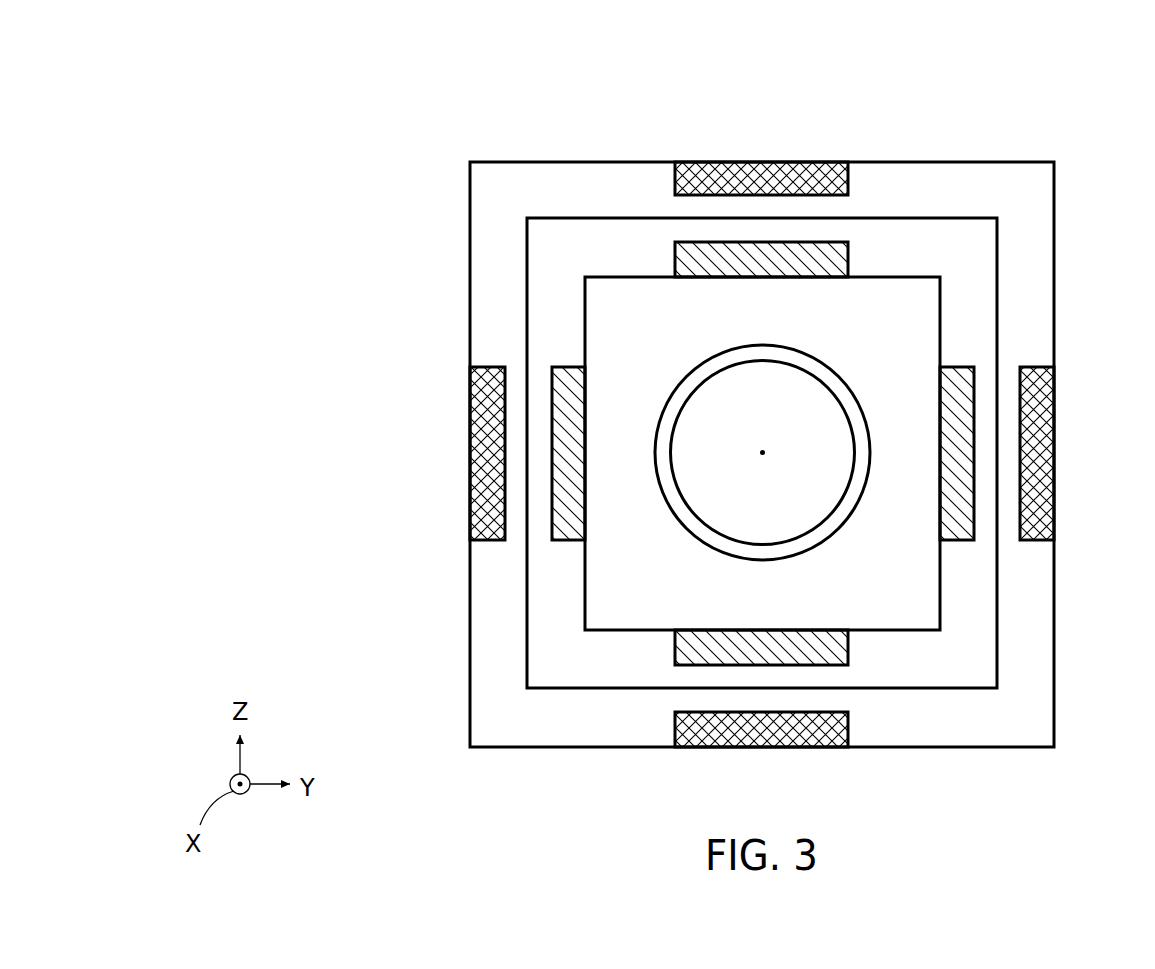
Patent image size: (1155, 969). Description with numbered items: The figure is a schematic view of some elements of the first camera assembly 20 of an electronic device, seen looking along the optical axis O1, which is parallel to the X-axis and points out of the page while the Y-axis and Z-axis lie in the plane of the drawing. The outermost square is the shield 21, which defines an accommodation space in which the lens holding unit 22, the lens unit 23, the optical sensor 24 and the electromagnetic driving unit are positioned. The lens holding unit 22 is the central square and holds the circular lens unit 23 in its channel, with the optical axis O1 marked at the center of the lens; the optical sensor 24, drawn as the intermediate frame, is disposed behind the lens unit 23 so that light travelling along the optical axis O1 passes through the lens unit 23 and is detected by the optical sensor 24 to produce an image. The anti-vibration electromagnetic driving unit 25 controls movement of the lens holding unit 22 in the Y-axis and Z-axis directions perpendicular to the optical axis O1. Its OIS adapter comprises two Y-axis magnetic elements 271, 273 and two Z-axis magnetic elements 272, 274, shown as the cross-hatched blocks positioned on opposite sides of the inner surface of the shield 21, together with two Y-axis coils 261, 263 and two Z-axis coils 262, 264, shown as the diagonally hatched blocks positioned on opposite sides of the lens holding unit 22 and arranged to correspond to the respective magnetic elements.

The first camera assembly 20 is at (430, 157).
The shield 21 is at (560, 159).
The lens holding unit 22 is at (893, 275).
The lens unit 23 is at (717, 412).
The optical sensor 24 is at (970, 220).
The anti-vibration electromagnetic driving unit 25 is at (1042, 354).
The Y-axis coil 261 is at (960, 490).
The Z-axis coil 262 is at (805, 250).
The Y-axis coil 263 is at (560, 492).
The Z-axis coil 264 is at (805, 655).
The Y-axis magnetic element 271 is at (1040, 425).
The Z-axis magnetic element 272 is at (757, 162).
The Y-axis magnetic element 273 is at (478, 424).
The Z-axis magnetic element 274 is at (757, 747).
The optical axis O1 is at (760, 457).